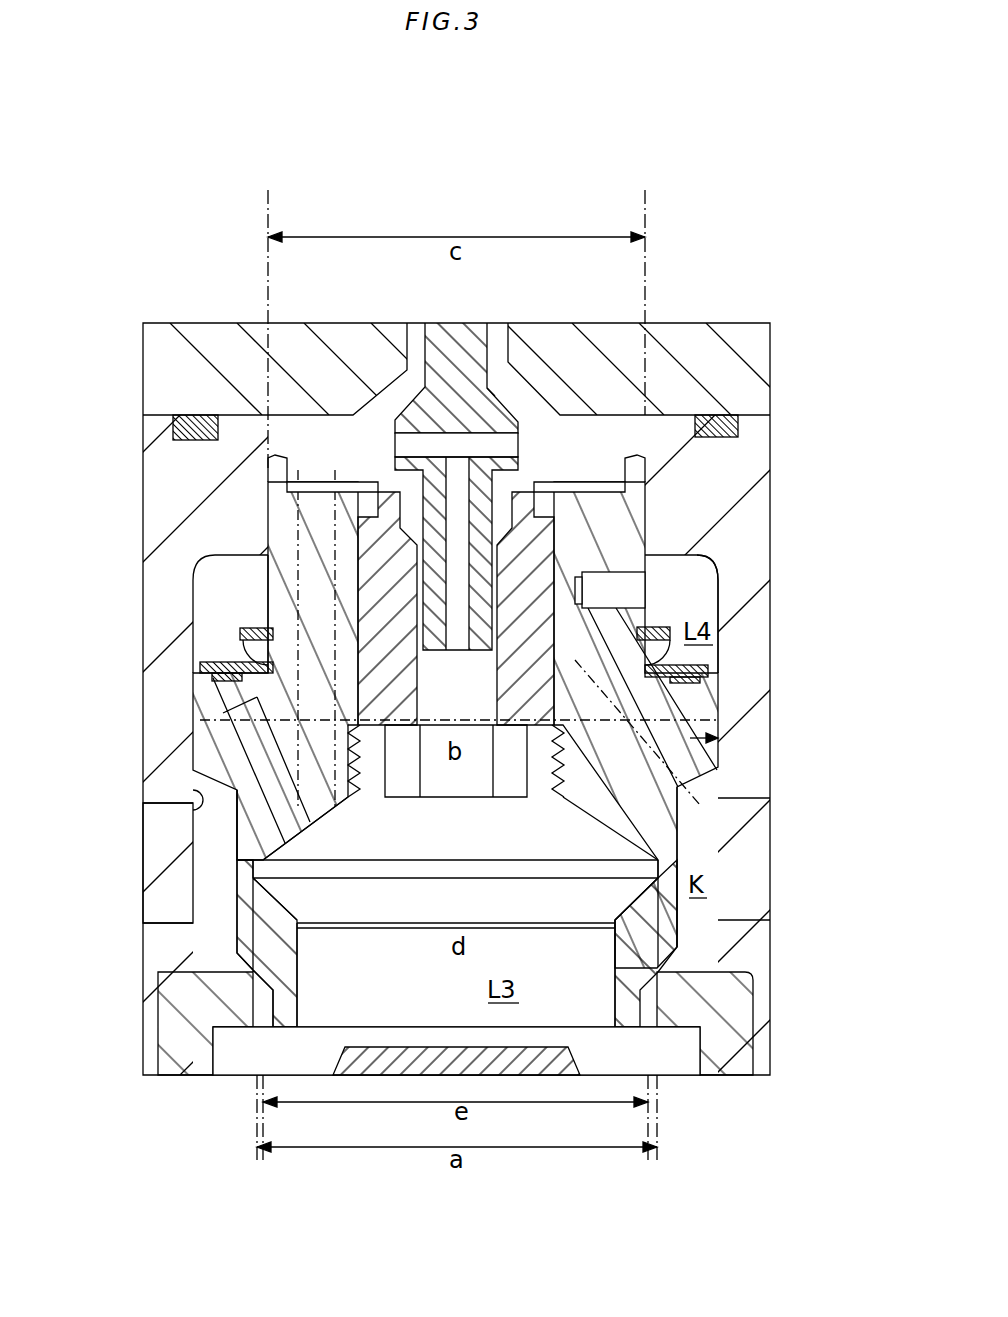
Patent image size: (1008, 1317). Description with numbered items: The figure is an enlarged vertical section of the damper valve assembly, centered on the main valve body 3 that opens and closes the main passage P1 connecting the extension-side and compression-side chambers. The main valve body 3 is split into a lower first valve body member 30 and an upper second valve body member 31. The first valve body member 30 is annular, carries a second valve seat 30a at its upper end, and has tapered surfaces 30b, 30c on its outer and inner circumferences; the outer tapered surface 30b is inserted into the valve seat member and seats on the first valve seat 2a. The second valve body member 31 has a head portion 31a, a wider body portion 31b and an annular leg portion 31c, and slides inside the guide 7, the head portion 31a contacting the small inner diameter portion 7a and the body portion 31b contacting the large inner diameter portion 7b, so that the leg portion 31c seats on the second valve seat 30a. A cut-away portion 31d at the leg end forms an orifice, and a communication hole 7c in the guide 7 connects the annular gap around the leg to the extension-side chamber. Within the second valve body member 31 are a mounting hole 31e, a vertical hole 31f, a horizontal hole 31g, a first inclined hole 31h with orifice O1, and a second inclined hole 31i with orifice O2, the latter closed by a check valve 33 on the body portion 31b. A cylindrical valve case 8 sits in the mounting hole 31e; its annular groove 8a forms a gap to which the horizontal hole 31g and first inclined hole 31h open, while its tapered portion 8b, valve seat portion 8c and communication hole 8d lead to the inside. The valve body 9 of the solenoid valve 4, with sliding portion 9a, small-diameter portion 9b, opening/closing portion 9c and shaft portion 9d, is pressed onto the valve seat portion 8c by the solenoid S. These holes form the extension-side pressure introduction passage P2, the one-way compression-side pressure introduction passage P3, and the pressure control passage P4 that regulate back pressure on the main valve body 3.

The solenoid S is at (205, 322).
The first valve seat 2a is at (277, 973).
The main valve body 3 is at (680, 830).
The solenoid valve 4 is at (393, 402).
The guide 7 is at (770, 785).
The small inner diameter portion 7a is at (277, 437).
The large inner diameter portion 7b is at (190, 812).
The communication hole 7c is at (745, 895).
The valve case 8 is at (565, 712).
The annular groove 8a is at (370, 632).
The tapered portion 8b is at (600, 578).
The valve seat portion 8c is at (395, 493).
The communication hole 8d is at (553, 530).
The valve body 9 is at (512, 400).
The sliding portion 9a is at (635, 597).
The small-diameter portion 9b is at (563, 480).
The opening/closing portion 9c is at (513, 477).
The shaft portion 9d is at (493, 385).
The first valve body member 30 is at (193, 975).
The second valve seat 30a is at (237, 880).
The tapered surface 30b is at (165, 1000).
The tapered surface 30c is at (280, 898).
The second valve body member 31 is at (193, 767).
The head portion 31a is at (268, 480).
The body portion 31b is at (690, 760).
The leg portion 31c is at (237, 840).
The cut-away portion 31d is at (660, 862).
The mounting hole 31e is at (268, 620).
The vertical hole 31f is at (205, 560).
The horizontal hole 31g is at (720, 590).
The first inclined hole 31h is at (650, 772).
The second inclined hole 31i is at (290, 837).
The check valve 33 is at (243, 636).
The orifice O1 is at (505, 690).
The orifice O2 is at (215, 700).
The main passage P1 is at (141, 907).
The extension-side pressure introduction passage P2 is at (650, 715).
The compression-side pressure introduction passage P3 is at (213, 723).
The pressure control passage P4 is at (296, 538).